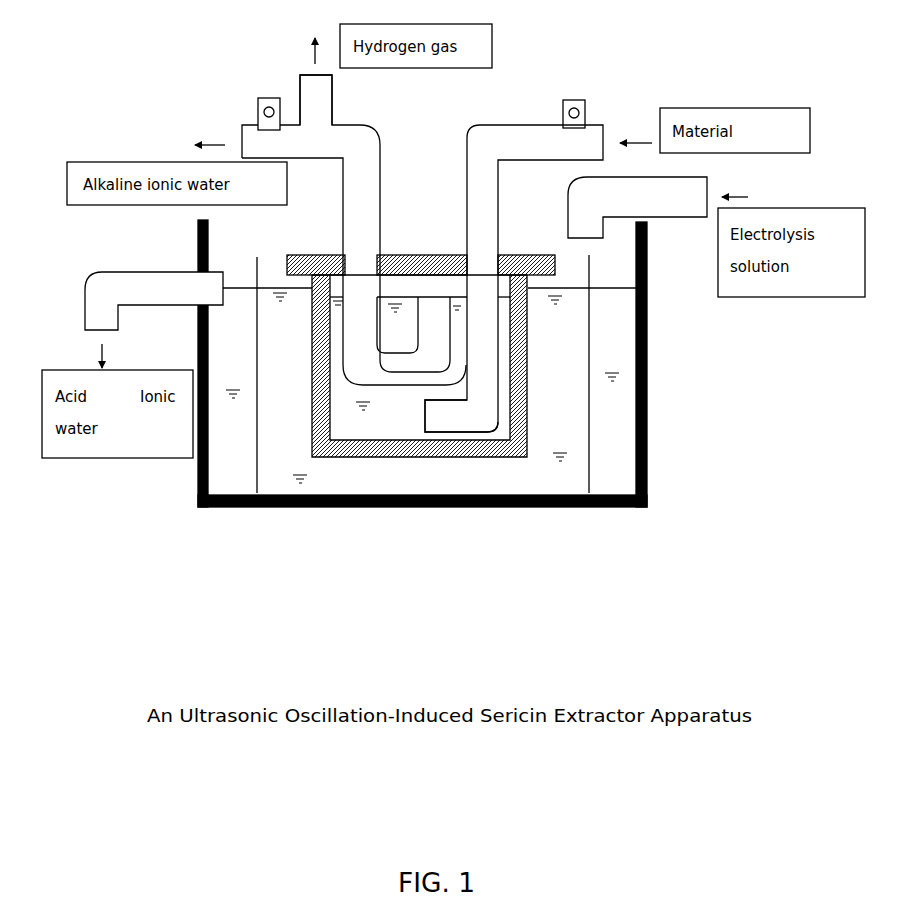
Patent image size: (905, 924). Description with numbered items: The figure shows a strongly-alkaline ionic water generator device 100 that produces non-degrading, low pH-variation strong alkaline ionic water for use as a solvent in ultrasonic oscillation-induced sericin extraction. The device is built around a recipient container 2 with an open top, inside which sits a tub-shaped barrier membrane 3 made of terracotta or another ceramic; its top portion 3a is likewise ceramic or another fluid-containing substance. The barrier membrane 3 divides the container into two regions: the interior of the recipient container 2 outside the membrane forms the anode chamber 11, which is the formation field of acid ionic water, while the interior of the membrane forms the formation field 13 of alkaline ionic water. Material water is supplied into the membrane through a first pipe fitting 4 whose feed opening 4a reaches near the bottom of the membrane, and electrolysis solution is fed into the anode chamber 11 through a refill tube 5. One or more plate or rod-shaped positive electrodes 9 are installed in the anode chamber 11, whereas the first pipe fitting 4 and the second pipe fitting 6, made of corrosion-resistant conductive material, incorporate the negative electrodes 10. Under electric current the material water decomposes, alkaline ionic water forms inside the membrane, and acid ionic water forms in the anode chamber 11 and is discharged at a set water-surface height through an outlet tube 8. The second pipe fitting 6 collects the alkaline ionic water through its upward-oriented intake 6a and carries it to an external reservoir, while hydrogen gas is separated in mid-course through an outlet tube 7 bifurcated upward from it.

The recipient container 2 is at (650, 380).
The barrier membrane 3 is at (489, 458).
The top portion of the barrier membrane 3a is at (513, 257).
The first pipe fitting 4 is at (465, 136).
The feed opening 4a is at (426, 456).
The refill tube 5 is at (700, 178).
The second pipe fitting 6 is at (381, 218).
The intake 6a is at (433, 296).
The outlet tube for hydrogen gas 7 is at (334, 82).
The outlet tube for acid ionic water 8 is at (148, 272).
The positive electrodes 9 is at (253, 260).
The negative electrodes 10 is at (258, 100).
The anode chamber 11 is at (565, 487).
The formation field of alkaline ionic water 13 is at (342, 424).
The strongly-alkaline ionic water generator device 100 is at (448, 646).